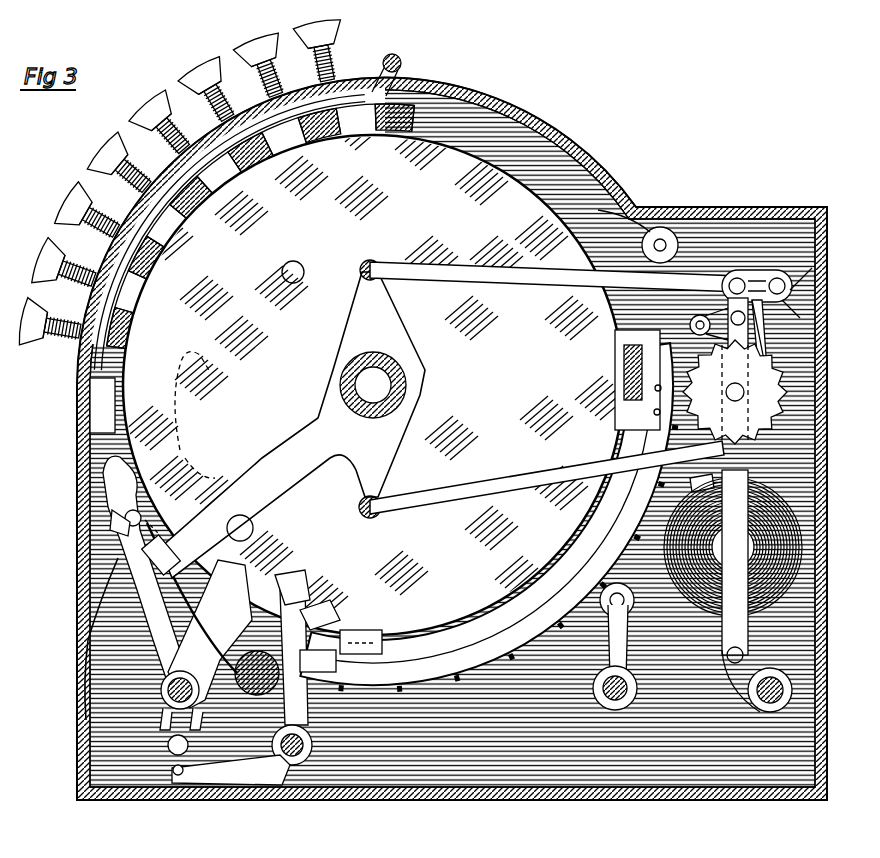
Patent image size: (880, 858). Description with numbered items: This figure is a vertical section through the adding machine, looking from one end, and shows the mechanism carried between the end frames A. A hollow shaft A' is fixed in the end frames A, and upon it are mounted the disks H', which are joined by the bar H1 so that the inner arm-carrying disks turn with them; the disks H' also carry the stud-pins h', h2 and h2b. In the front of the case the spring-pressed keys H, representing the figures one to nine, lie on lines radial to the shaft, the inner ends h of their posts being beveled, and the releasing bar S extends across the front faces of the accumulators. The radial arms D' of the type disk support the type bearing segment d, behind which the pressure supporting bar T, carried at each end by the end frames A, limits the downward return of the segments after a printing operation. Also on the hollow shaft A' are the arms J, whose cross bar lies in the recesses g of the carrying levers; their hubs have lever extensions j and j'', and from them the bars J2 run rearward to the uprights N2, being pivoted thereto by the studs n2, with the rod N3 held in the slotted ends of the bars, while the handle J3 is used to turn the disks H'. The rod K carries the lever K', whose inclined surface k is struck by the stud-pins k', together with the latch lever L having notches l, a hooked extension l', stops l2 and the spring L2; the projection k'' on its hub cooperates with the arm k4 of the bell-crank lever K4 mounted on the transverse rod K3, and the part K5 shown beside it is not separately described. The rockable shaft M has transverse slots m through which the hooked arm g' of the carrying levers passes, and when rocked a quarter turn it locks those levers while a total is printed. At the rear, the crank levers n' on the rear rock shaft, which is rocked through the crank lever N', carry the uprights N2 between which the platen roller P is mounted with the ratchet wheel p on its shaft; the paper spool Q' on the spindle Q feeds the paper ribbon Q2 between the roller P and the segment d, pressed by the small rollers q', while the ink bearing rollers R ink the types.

The end frames A is at (452, 439).
The hollow shaft A' is at (397, 385).
The spring-pressed keys H is at (184, 185).
The disks H' is at (375, 370).
The bar H1 is at (361, 649).
The inner ends of key posts h is at (261, 227).
The stud-pin h' is at (303, 263).
The stud-pin h2 is at (253, 528).
The arms J is at (283, 425).
The bars J2 is at (528, 268).
The handle J3 is at (515, 462).
The lever extension j is at (369, 282).
The lever extension j'' is at (370, 482).
The inclined surfaces k is at (198, 405).
The rod K is at (158, 690).
The lever K' is at (199, 615).
The transverse rod K3 is at (292, 755).
The bell-crank lever K4 is at (294, 655).
The foot bar K5 is at (230, 784).
The stud-pins k' is at (162, 719).
The projection k'' is at (196, 719).
The upwardly projecting arm k4 is at (172, 752).
The latch lever L is at (147, 573).
The springs L2 is at (105, 639).
The notches l is at (110, 525).
The hooked extensions l' is at (145, 491).
The stops l2 is at (162, 514).
The rockable shaft M is at (257, 684).
The transverse slots m is at (320, 618).
The recesses g is at (691, 324).
The arm g' is at (292, 592).
The arms D' is at (486, 514).
The type bearing segment d is at (540, 640).
The pressure supporting bar T is at (615, 395).
The releasing bar S is at (119, 402).
The ink bearing rollers R is at (678, 245).
The platen roller P is at (782, 375).
The ratchet-wheel p is at (775, 345).
The spindle Q is at (733, 547).
The spool of paper Q' is at (718, 547).
The paper ribbon Q2 is at (791, 303).
The spring pressed rollers q' is at (693, 486).
The crank lever N' is at (752, 695).
The uprights N2 is at (740, 591).
The rod N3 is at (801, 274).
The crank levers n' is at (720, 689).
The studs n2 is at (770, 278).
The stud-pin h2b is at (738, 278).